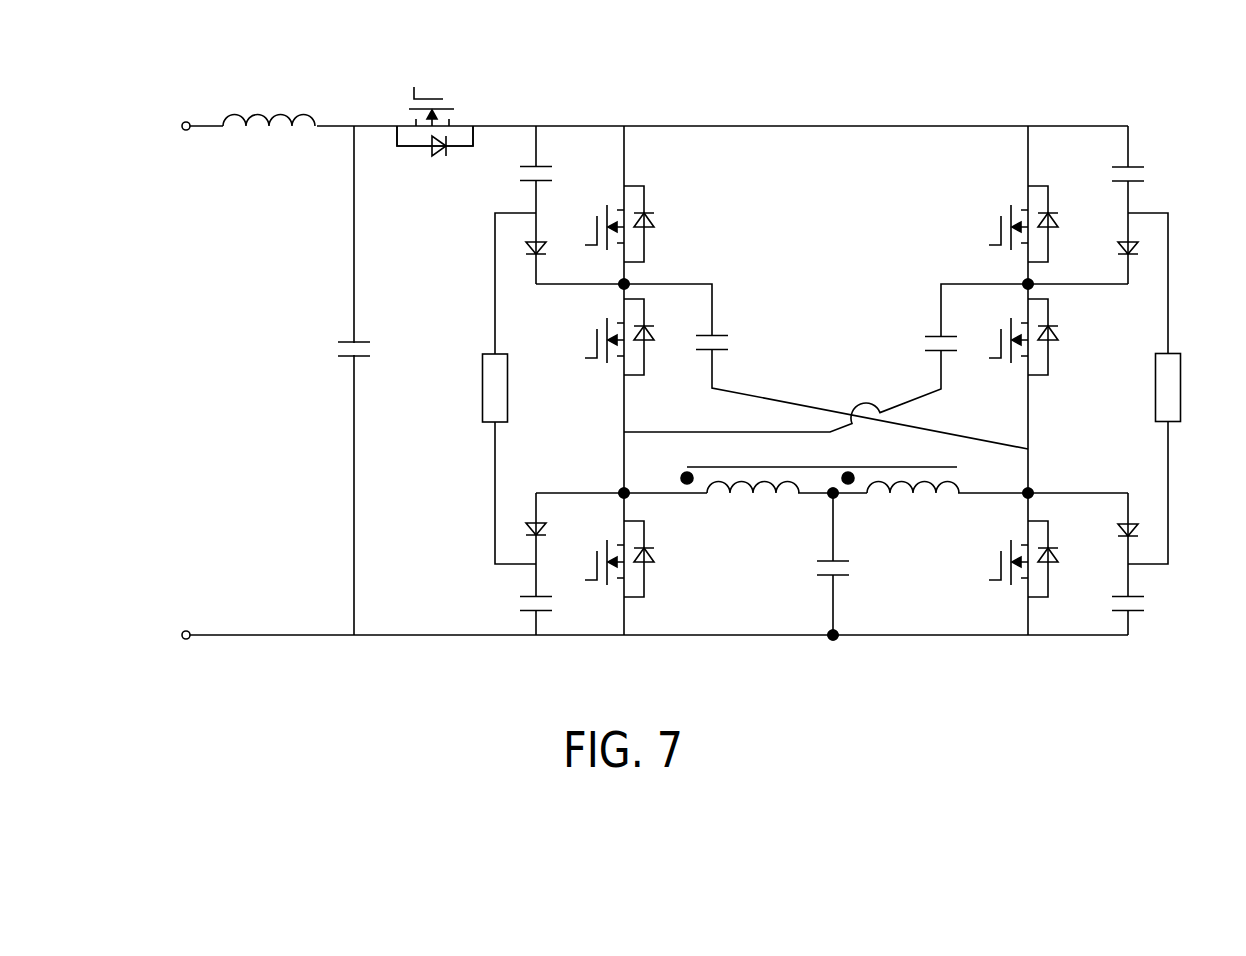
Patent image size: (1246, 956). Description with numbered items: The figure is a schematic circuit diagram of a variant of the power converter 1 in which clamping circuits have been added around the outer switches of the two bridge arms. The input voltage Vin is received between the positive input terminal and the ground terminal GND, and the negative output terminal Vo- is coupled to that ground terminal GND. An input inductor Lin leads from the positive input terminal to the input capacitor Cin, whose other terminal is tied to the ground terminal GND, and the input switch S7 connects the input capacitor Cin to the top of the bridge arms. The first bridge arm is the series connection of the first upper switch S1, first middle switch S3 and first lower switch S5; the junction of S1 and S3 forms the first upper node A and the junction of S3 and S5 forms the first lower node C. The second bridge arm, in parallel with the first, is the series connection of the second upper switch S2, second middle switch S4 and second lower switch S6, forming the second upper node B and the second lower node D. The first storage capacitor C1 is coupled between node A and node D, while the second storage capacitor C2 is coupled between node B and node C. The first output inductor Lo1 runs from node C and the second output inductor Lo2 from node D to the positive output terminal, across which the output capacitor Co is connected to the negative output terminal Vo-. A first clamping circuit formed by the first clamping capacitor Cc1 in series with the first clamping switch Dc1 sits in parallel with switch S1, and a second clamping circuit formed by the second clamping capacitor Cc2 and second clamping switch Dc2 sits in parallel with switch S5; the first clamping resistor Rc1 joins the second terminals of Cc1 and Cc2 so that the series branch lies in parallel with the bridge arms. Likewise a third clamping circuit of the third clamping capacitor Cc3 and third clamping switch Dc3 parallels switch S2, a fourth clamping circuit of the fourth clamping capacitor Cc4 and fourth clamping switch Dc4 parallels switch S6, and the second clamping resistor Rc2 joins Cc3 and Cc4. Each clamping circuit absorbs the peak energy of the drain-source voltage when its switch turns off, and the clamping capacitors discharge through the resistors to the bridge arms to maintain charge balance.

The power converter 1 is at (1178, 63).
The input inductor Lin is at (269, 98).
The input capacitor Cin is at (325, 351).
The input switch S7 is at (435, 107).
The first clamping capacitor Cc1 is at (511, 167).
The second clamping capacitor Cc2 is at (511, 599).
The third clamping capacitor Cc3 is at (1157, 167).
The fourth clamping capacitor Cc4 is at (1157, 601).
The first clamping switch Dc1 is at (530, 280).
The second clamping switch Dc2 is at (530, 495).
The third clamping switch Dc3 is at (1103, 247).
The fourth clamping switch Dc4 is at (1104, 526).
The first clamping resistor Rc1 is at (485, 388).
The second clamping resistor Rc2 is at (1179, 388).
The first upper switch S1 is at (608, 224).
The second upper switch S2 is at (1012, 224).
The first middle switch S3 is at (608, 337).
The second middle switch S4 is at (1011, 337).
The first lower switch S5 is at (608, 559).
The second lower switch S6 is at (1012, 559).
The first storage capacitor C1 is at (735, 341).
The second storage capacitor C2 is at (922, 342).
The first output inductor Lo1 is at (753, 507).
The second output inductor Lo2 is at (913, 507).
The output capacitor Co is at (815, 566).
The first upper node A is at (612, 299).
The second upper node B is at (1016, 271).
The first lower node C is at (613, 476).
The second lower node D is at (1038, 476).
The input voltage Vin is at (229, 380).
The ground terminal GND is at (154, 634).
The negative output terminal Vo- is at (854, 617).